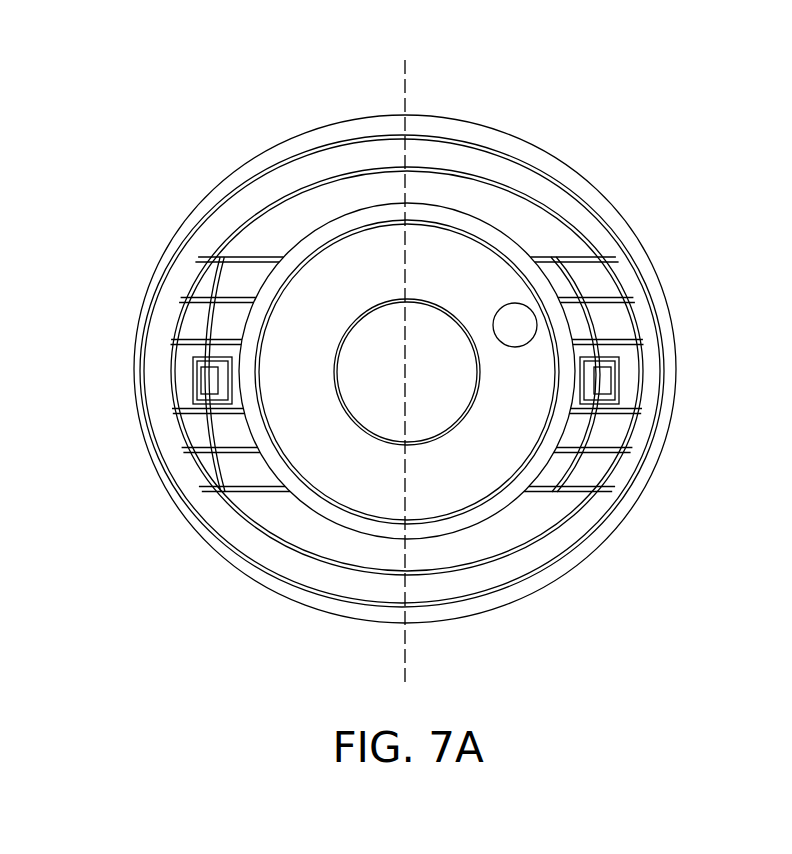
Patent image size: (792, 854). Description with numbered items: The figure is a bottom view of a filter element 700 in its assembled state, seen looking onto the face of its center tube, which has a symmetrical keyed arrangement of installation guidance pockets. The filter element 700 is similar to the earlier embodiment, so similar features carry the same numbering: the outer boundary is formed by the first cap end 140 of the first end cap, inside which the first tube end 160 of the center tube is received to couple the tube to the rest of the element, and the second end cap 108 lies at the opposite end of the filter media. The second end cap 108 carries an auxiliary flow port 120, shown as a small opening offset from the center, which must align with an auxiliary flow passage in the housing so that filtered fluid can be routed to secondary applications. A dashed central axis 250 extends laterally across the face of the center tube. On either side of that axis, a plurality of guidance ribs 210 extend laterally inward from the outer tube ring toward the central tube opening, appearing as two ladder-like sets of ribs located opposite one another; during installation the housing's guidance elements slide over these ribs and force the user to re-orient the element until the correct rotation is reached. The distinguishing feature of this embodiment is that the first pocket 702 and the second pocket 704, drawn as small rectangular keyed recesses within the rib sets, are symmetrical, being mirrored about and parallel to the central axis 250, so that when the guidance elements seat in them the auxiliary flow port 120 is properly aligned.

The filter element 700 is at (140, 130).
The first cap end 140 is at (186, 480).
The first tube end 160 is at (522, 525).
The plurality of guidance ribs 210 is at (613, 320).
The second end cap 108 is at (330, 286).
The auxiliary flow port 120 is at (517, 325).
The central axis 250 is at (405, 358).
The first pocket 702 is at (606, 376).
The second pocket 704 is at (208, 378).